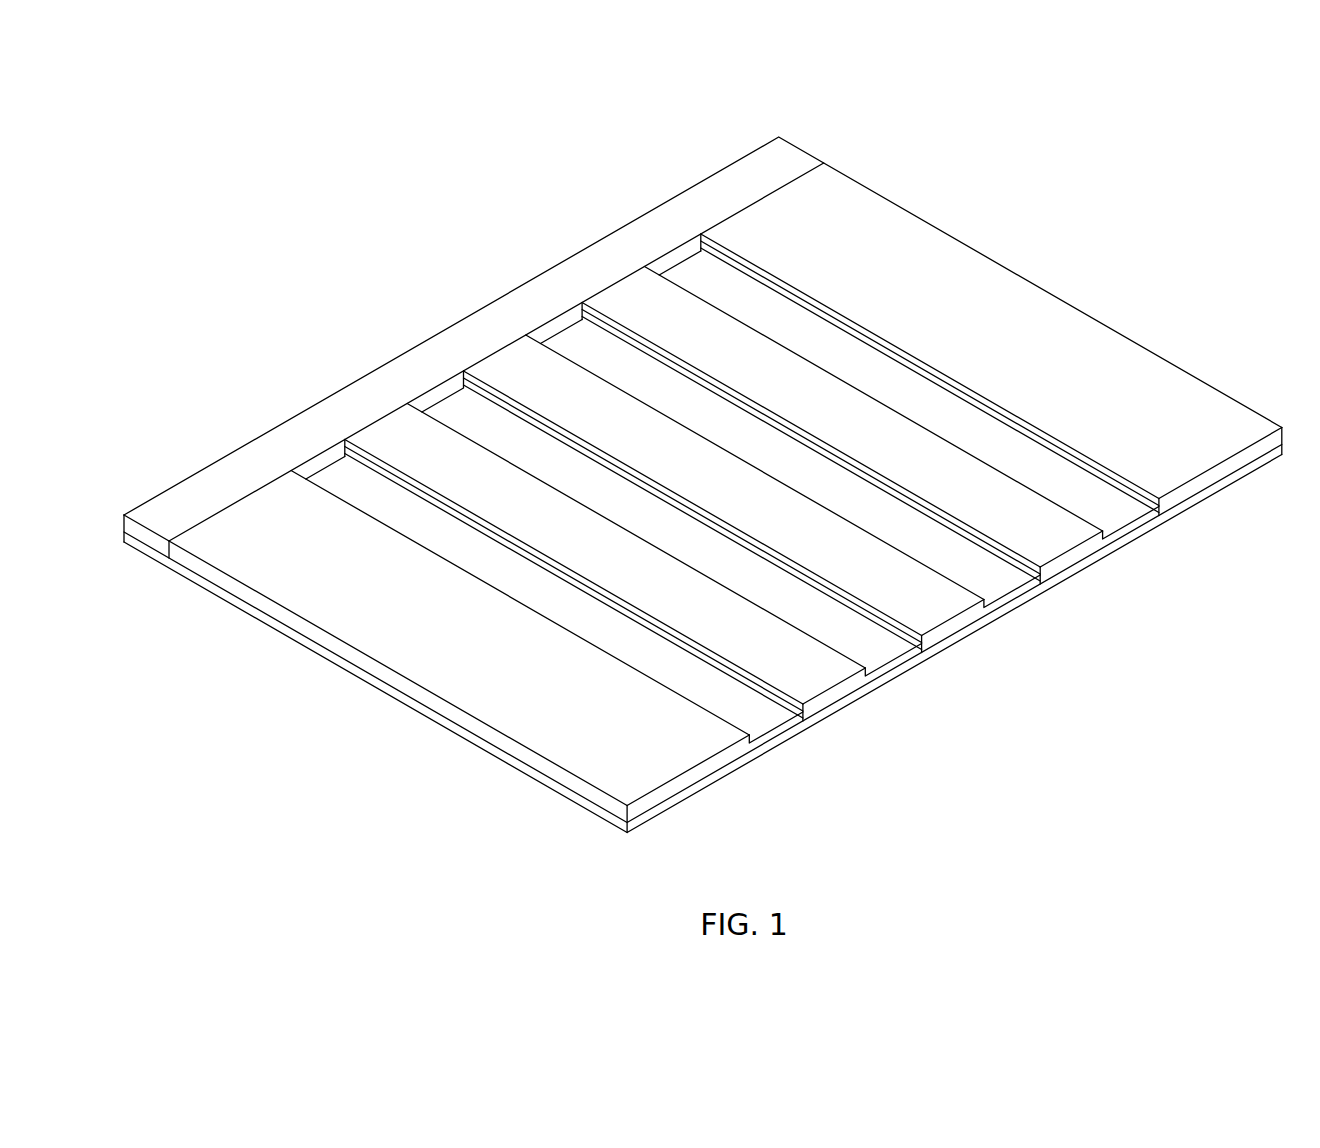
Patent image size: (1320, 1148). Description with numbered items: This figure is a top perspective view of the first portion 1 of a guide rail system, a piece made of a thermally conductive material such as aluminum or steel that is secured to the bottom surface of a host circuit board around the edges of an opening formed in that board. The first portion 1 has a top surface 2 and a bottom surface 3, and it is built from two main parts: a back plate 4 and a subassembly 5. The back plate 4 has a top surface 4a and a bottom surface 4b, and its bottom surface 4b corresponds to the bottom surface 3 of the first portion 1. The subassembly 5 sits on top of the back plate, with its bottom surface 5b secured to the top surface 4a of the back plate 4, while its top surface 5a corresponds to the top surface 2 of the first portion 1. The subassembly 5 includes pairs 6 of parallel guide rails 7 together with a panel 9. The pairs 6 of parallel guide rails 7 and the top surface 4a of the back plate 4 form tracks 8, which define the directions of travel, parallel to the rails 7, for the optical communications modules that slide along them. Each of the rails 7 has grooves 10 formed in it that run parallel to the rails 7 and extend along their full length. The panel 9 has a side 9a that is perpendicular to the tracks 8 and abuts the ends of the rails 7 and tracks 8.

The first portion 1 is at (992, 106).
The top surface 2 is at (1222, 442).
The bottom surface 3 is at (1268, 468).
The back plate 4 is at (242, 612).
The top surface 4a is at (490, 733).
The bottom surface 4b is at (457, 750).
The subassembly 5 is at (197, 565).
The top surface 5a is at (403, 643).
The bottom surface 5b is at (355, 676).
The pairs of parallel guide rails 6 is at (818, 402).
The guide rails 7 is at (1031, 490).
The tracks 8 is at (952, 414).
The panel 9 is at (512, 310).
The side 9a is at (440, 396).
The grooves 10 is at (1148, 522).